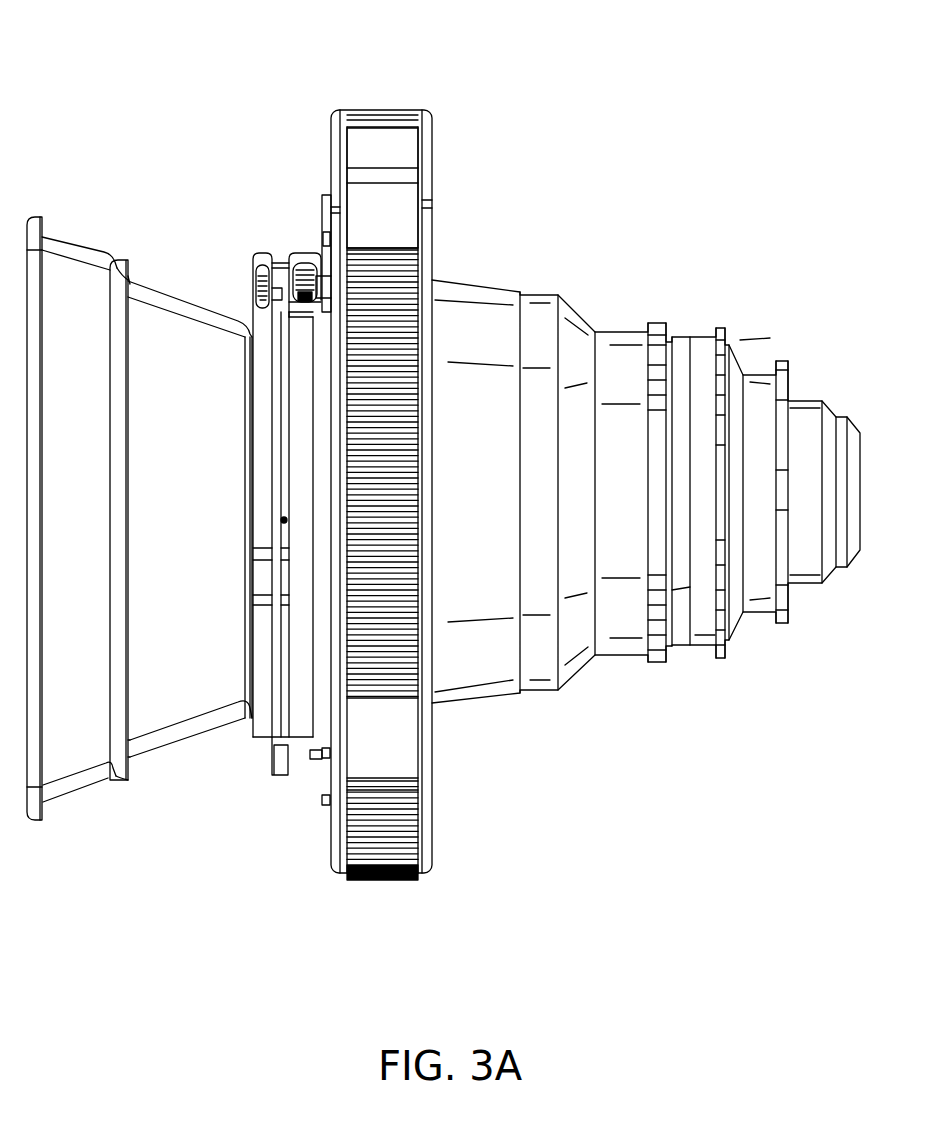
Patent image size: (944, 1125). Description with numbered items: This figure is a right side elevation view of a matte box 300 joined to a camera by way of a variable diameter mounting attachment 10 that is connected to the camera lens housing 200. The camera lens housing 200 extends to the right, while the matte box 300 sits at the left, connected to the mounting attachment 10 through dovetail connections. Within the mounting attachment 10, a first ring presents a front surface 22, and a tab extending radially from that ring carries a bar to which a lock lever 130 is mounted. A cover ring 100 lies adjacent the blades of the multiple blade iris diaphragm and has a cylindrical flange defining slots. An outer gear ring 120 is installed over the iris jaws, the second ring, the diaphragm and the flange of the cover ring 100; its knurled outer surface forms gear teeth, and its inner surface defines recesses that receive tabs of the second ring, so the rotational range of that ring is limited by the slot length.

The variable diameter mounting attachment 10 is at (452, 135).
The front surface 22 is at (425, 835).
The cover ring 100 is at (335, 850).
The outer gear ring 120 is at (386, 885).
The lock lever 130 is at (374, 140).
The camera lens housing 200 is at (532, 297).
The matte box 300 is at (80, 283).